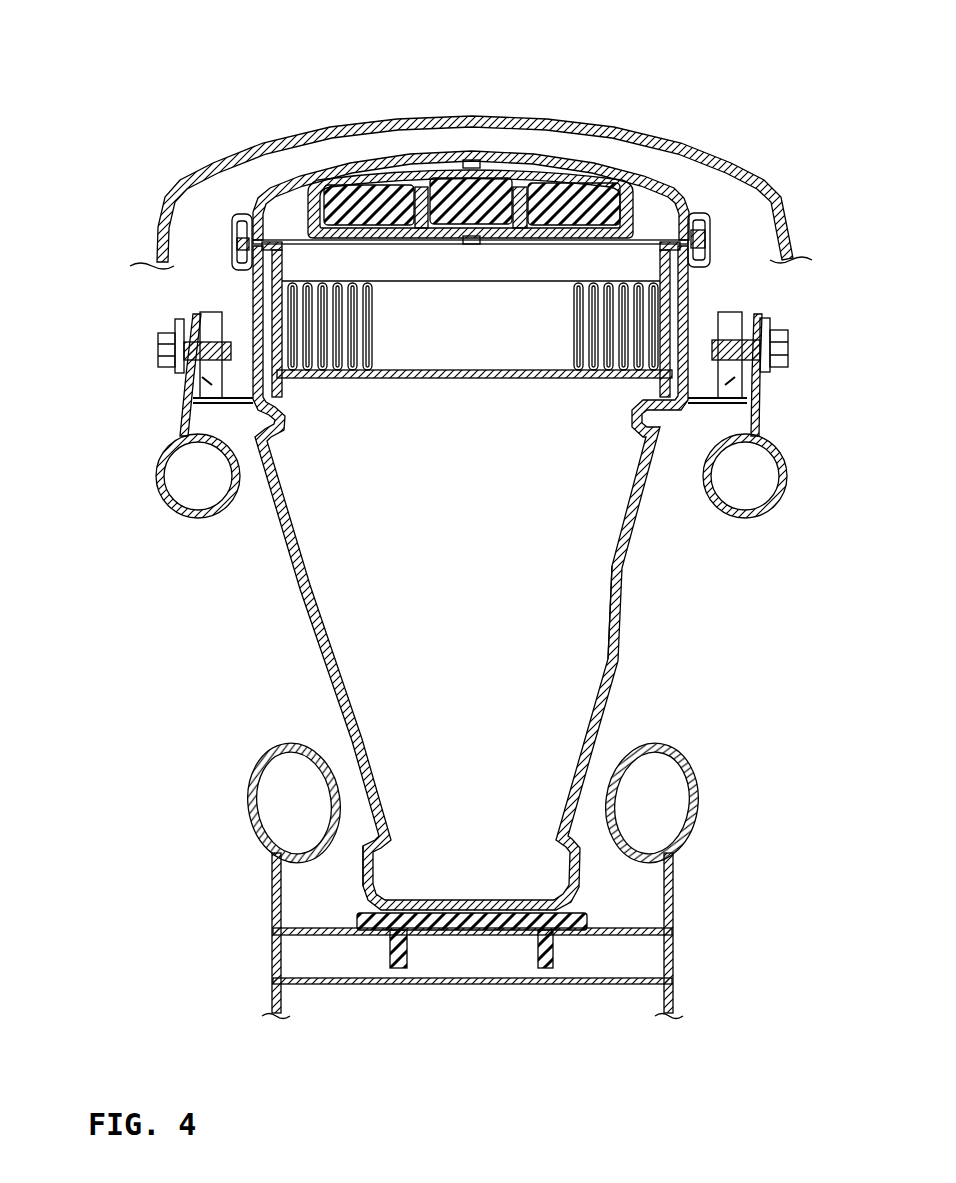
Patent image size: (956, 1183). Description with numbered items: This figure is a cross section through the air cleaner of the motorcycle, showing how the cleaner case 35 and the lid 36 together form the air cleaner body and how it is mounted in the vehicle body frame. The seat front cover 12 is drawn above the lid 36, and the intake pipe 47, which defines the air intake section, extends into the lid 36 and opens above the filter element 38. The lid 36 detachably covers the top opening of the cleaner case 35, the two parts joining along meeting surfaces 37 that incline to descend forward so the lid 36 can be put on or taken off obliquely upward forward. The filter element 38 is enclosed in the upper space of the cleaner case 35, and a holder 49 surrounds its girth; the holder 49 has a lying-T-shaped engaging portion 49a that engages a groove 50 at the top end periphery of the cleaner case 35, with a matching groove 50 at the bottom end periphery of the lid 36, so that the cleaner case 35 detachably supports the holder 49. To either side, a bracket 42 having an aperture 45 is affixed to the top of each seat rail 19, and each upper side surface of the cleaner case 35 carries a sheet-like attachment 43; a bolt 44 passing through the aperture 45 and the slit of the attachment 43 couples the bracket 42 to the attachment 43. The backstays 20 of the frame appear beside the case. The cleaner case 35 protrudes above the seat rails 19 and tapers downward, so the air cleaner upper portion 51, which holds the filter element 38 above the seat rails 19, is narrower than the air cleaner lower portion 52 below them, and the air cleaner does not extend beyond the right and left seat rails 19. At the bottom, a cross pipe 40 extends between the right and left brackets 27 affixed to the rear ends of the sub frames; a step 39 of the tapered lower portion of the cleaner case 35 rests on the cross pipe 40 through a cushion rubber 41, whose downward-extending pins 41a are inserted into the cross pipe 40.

The seat front cover 12 is at (480, 117).
The seat rail 19 is at (168, 512).
The backstay 20 is at (250, 770).
The bracket 27 is at (272, 890).
The cleaner case 35 is at (620, 661).
The lid 36 is at (587, 157).
The meeting surfaces 37 is at (293, 237).
The filter element 38 is at (333, 380).
The step 39 is at (366, 882).
The cross pipe 40 is at (480, 985).
The cushion rubber 41 is at (585, 912).
The pin 41a is at (392, 953).
The bracket 42 is at (180, 415).
The attachment 43 is at (207, 404).
The bolt 44 is at (157, 350).
The aperture 45 is at (180, 338).
The intake pipe 47 is at (370, 176).
The holder 49 is at (673, 300).
The engaging portion 49a is at (238, 244).
The groove 50 is at (232, 218).
The air cleaner upper portion 51 is at (655, 388).
The air cleaner lower portion 52 is at (612, 616).